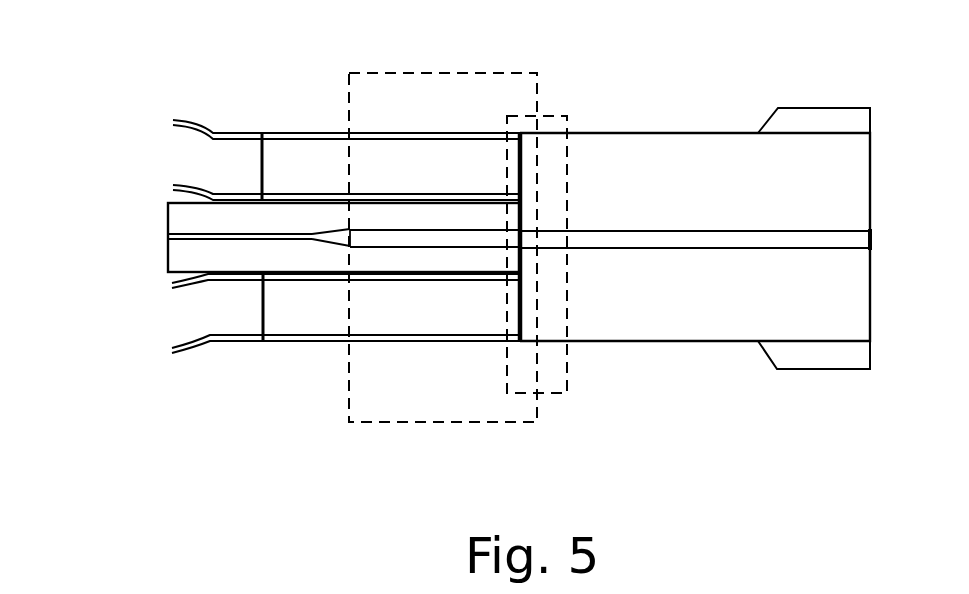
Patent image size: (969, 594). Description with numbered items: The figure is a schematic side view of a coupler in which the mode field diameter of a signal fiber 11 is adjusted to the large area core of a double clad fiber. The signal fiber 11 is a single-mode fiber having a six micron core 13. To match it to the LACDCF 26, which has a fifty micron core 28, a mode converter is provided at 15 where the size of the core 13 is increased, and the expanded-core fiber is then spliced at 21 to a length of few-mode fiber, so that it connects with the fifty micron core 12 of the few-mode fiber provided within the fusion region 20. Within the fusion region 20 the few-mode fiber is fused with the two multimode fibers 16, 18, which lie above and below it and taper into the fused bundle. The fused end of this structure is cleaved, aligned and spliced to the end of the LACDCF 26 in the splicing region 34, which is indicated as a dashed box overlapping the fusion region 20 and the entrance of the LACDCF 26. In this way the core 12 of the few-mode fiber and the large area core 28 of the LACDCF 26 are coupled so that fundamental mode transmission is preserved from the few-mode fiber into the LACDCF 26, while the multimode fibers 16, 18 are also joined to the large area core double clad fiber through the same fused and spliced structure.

The signal fiber 11 is at (163, 216).
The core of few-mode fiber 12 is at (432, 235).
The core of signal fiber 13 is at (190, 237).
The mode converter 15 is at (325, 257).
The multimode fiber 16 is at (213, 127).
The multimode fiber 18 is at (197, 350).
The fusion region 20 is at (410, 412).
The splice to few-mode fiber 21 is at (352, 238).
The LACDCF 26 is at (805, 101).
The large area core 28 is at (647, 237).
The splicing region 34 is at (567, 393).